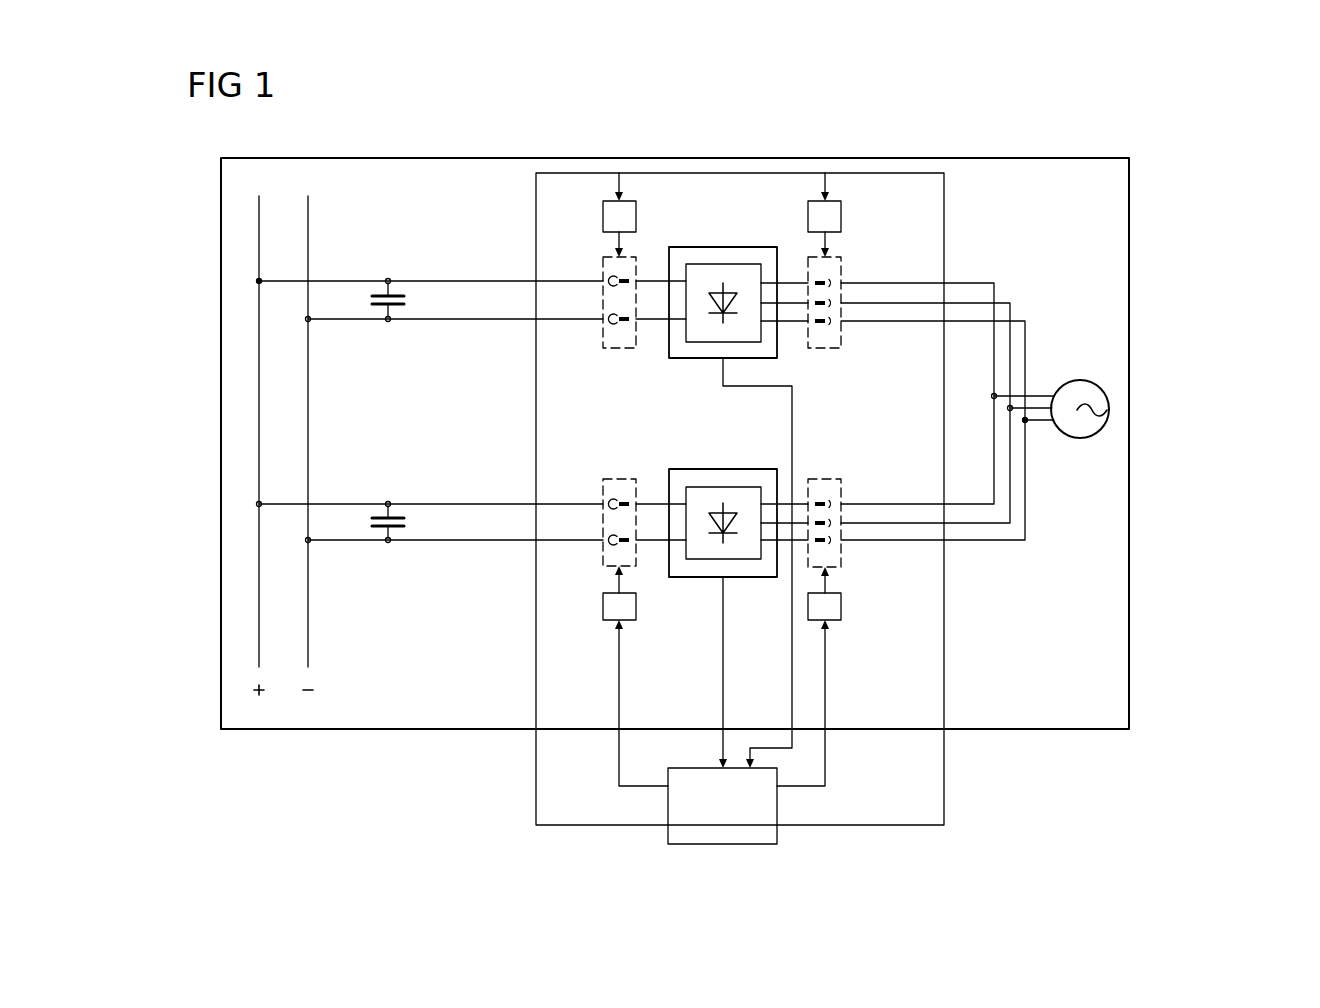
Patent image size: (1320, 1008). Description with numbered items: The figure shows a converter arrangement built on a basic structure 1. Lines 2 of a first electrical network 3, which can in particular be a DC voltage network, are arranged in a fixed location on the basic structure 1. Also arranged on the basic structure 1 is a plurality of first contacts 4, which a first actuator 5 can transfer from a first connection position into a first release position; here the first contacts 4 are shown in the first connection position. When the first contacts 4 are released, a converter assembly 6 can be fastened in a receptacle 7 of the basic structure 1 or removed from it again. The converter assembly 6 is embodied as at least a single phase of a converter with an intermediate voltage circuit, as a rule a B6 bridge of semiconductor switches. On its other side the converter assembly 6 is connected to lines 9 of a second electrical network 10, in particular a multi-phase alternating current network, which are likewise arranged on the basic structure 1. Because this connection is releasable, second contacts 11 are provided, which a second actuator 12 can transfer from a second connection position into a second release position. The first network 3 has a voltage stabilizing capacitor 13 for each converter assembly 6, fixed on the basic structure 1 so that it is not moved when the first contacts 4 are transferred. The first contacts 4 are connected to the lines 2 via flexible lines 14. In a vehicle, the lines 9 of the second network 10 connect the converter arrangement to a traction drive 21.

The basic structure 1 is at (1129, 199).
The lines 2 is at (308, 221).
The first electrical network 3 is at (291, 145).
The first contacts 4 is at (577, 560).
The first actuator 5 is at (630, 200).
The converter assembly 6 is at (700, 264).
The receptacle 7 is at (684, 181).
The lines 9 is at (994, 457).
The second electrical network 10 is at (1033, 283).
The second contacts 11 is at (828, 366).
The second actuator 12 is at (823, 201).
The voltage stabilizing capacitor 13 is at (389, 260).
The flexible lines 14 is at (779, 836).
The traction drive 21 is at (1109, 411).